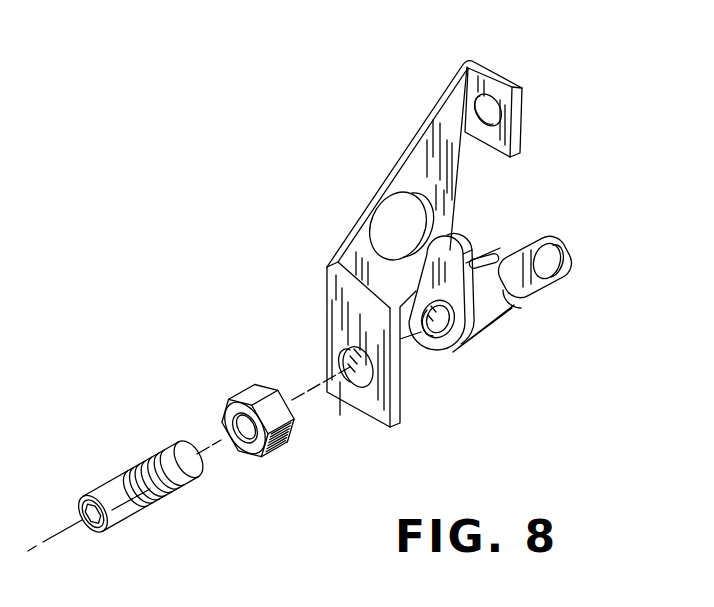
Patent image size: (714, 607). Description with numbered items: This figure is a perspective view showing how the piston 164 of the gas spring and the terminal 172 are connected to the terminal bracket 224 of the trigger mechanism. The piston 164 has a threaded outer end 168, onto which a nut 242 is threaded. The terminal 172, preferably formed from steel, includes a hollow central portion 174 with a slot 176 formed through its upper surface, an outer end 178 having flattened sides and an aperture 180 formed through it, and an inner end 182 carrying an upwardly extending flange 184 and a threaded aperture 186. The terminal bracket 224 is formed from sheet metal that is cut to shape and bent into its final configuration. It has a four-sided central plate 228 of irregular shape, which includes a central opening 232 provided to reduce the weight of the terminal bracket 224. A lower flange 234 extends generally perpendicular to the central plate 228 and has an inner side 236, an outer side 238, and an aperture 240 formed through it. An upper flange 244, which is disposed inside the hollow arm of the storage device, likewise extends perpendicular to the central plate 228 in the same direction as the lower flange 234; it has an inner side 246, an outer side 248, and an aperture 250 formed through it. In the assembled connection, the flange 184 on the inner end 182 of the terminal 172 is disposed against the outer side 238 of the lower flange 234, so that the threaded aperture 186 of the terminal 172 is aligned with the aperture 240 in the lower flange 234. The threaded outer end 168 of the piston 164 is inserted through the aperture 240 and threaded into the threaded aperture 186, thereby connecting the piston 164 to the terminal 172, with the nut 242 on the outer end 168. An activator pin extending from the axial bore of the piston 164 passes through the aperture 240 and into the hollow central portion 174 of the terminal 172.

The piston 164 is at (113, 470).
The outer end of the piston 168 is at (170, 493).
The terminal 172 is at (501, 344).
The hollow central portion 174 is at (512, 299).
The slot 176 is at (485, 245).
The outer end of the terminal 178 is at (549, 229).
The aperture 180 is at (559, 262).
The inner end of the terminal 182 is at (475, 348).
The flange 184 is at (378, 195).
The threaded aperture 186 is at (434, 347).
The terminal bracket 224 is at (353, 206).
The central plate 228 is at (437, 143).
The central opening 232 is at (372, 233).
The lower flange 234 is at (334, 313).
The inner side 236 is at (345, 280).
The outer side 238 is at (333, 335).
The aperture 240 is at (356, 388).
The nut 242 is at (230, 403).
The upper flange 244 is at (510, 70).
The inner side 246 is at (514, 138).
The outer side 248 is at (524, 100).
The aperture 250 is at (487, 97).